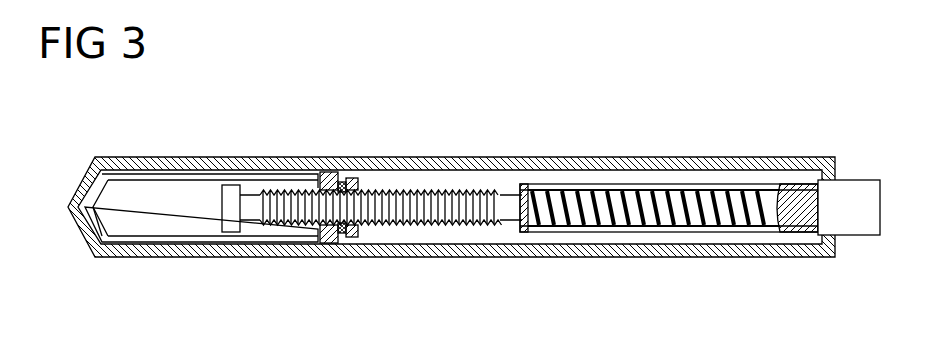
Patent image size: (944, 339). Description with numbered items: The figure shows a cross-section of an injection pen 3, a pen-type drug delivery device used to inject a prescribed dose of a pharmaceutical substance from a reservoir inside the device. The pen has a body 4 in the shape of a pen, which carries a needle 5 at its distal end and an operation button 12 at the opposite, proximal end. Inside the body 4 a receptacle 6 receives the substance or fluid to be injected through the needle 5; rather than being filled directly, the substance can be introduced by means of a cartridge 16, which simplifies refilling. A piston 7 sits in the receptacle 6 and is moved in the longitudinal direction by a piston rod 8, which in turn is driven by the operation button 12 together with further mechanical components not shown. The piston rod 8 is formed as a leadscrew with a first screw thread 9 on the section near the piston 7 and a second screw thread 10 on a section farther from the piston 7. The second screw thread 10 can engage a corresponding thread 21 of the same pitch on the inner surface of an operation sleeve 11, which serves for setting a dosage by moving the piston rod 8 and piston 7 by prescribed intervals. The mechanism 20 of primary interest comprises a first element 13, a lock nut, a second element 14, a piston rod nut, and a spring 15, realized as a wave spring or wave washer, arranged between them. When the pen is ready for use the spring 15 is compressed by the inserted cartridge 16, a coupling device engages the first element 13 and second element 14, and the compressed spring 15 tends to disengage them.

The injection pen 3 is at (553, 85).
The body 4 is at (437, 257).
The needle 5 is at (60, 208).
The receptacle 6 is at (178, 241).
The piston 7 is at (233, 221).
The piston rod 8 is at (503, 222).
The first screw thread 9 is at (424, 192).
The second screw thread 10 is at (622, 185).
The operation sleeve 11 is at (717, 185).
The operation button 12 is at (853, 190).
The first element 13 is at (325, 243).
The second element 14 is at (352, 238).
The spring 15 is at (341, 233).
The cartridge 16 is at (121, 243).
The mechanism 20 is at (397, 50).
The thread 21 is at (760, 185).